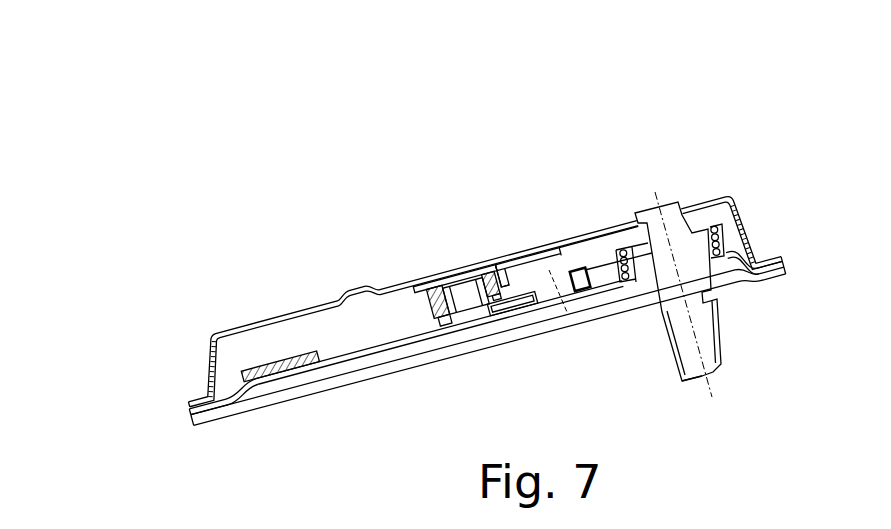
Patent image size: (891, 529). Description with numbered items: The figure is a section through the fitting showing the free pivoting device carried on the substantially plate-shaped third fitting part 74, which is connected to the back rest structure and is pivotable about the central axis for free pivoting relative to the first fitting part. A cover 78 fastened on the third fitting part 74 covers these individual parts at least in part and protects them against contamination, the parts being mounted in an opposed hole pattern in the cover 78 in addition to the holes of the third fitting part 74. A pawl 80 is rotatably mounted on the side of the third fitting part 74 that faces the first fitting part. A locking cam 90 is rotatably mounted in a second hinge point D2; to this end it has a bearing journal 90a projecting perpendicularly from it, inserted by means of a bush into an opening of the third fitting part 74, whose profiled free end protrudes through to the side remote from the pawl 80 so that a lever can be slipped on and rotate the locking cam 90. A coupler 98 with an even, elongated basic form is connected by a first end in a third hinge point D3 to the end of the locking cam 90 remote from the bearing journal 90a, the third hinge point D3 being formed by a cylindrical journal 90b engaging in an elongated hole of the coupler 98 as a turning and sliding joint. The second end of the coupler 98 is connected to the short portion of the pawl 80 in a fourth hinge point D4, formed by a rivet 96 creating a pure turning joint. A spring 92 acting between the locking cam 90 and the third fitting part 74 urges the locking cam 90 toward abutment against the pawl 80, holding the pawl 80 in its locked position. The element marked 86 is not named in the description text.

The third fitting part 74 is at (327, 368).
The cover 78 is at (737, 207).
The pawl 80 is at (422, 292).
The bottom plate 86 is at (541, 392).
The locking cam 90 is at (568, 255).
The bearing journal 90a is at (707, 380).
The cylindrical journal 90b is at (532, 270).
The spring 92 is at (722, 232).
The rivet 96 is at (468, 306).
The coupler 98 is at (519, 293).
The second hinge point D2 is at (656, 215).
The third hinge point D3 is at (558, 312).
The fourth hinge point D4 is at (452, 270).